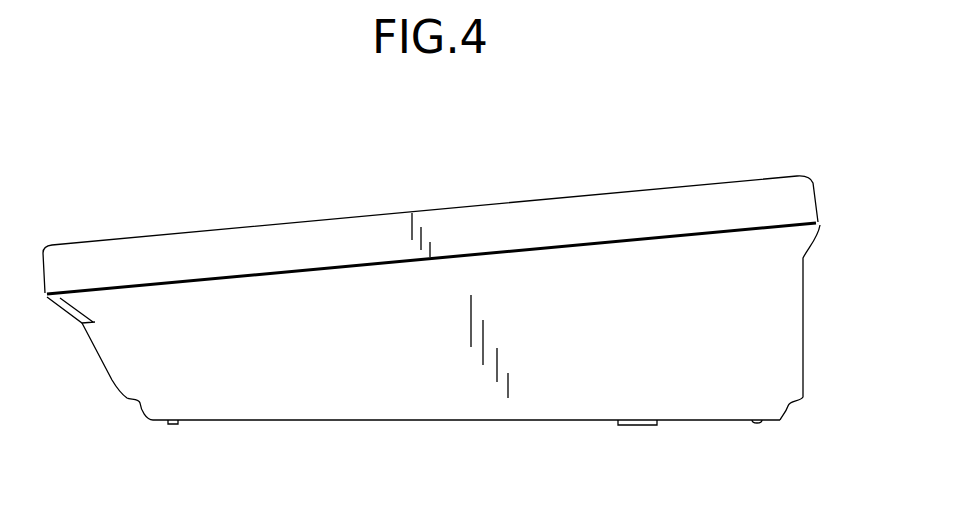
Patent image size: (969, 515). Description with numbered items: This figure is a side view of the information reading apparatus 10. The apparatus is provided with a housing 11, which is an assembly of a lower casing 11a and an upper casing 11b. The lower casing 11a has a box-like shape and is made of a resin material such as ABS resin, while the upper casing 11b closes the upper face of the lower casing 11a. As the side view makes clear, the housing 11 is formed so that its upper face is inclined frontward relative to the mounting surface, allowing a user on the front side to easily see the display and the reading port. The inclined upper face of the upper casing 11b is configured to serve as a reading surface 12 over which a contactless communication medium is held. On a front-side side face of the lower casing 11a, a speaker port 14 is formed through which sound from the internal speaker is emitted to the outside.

The information reading apparatus 10 is at (224, 176).
The housing 11 is at (711, 142).
The lower casing 11a is at (455, 421).
The upper casing 11b is at (633, 192).
The reading surface 12 is at (505, 203).
The speaker port 14 is at (113, 380).